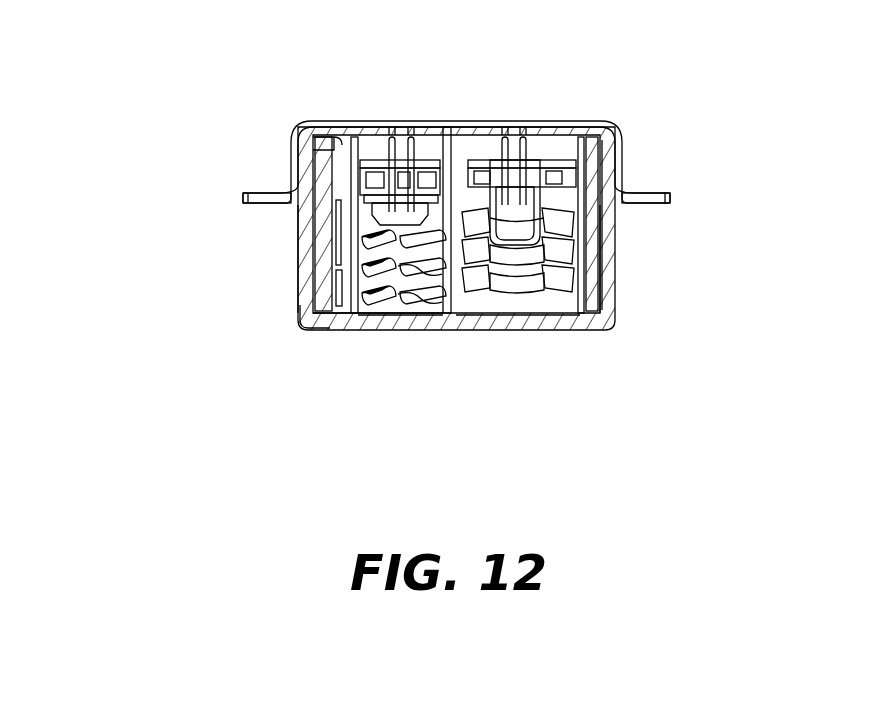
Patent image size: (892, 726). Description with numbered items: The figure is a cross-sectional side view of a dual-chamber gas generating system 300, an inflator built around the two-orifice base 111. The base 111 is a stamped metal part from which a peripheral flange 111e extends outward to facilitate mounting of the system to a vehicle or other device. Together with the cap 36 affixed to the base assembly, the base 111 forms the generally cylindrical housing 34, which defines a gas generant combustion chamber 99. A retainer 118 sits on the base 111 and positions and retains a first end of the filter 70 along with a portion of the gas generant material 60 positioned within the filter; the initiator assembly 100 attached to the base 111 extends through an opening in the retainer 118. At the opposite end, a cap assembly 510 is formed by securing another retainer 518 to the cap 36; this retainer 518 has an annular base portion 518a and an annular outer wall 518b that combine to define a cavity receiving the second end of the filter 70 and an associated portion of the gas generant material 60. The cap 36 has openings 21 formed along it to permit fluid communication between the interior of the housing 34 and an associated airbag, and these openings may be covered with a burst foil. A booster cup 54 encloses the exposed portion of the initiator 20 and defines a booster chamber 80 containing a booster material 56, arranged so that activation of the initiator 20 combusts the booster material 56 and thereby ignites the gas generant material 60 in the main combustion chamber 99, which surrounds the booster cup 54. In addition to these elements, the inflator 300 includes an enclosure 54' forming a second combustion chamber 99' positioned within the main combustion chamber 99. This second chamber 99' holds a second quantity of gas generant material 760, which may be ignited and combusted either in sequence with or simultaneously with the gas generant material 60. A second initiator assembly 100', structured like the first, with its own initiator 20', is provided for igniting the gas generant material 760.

The gas generating system 300 is at (168, 182).
The retainer 118 is at (593, 120).
The base 111 is at (617, 127).
The peripheral flange 111e is at (627, 192).
The filter 70 is at (318, 140).
The booster cup 54 is at (288, 206).
The enclosure 54' is at (655, 224).
The initiator assembly 100 is at (401, 118).
The second initiator assembly 100' is at (512, 99).
The initiator 20 is at (310, 158).
The initiator 20' is at (494, 136).
The booster material 56 is at (355, 266).
The gas generant material 60 is at (336, 284).
The outer wall 518b is at (305, 293).
The retainer 518 is at (310, 323).
The cap assembly 510 is at (341, 332).
The housing 34 is at (372, 320).
The booster chamber 80 is at (393, 283).
The base portion 518a is at (462, 313).
The second combustion chamber 99' is at (567, 337).
The gas generant combustion chamber 99 is at (607, 292).
The cap 36 is at (583, 300).
The gas generant material 760 is at (598, 252).
The openings 21 is at (600, 230).